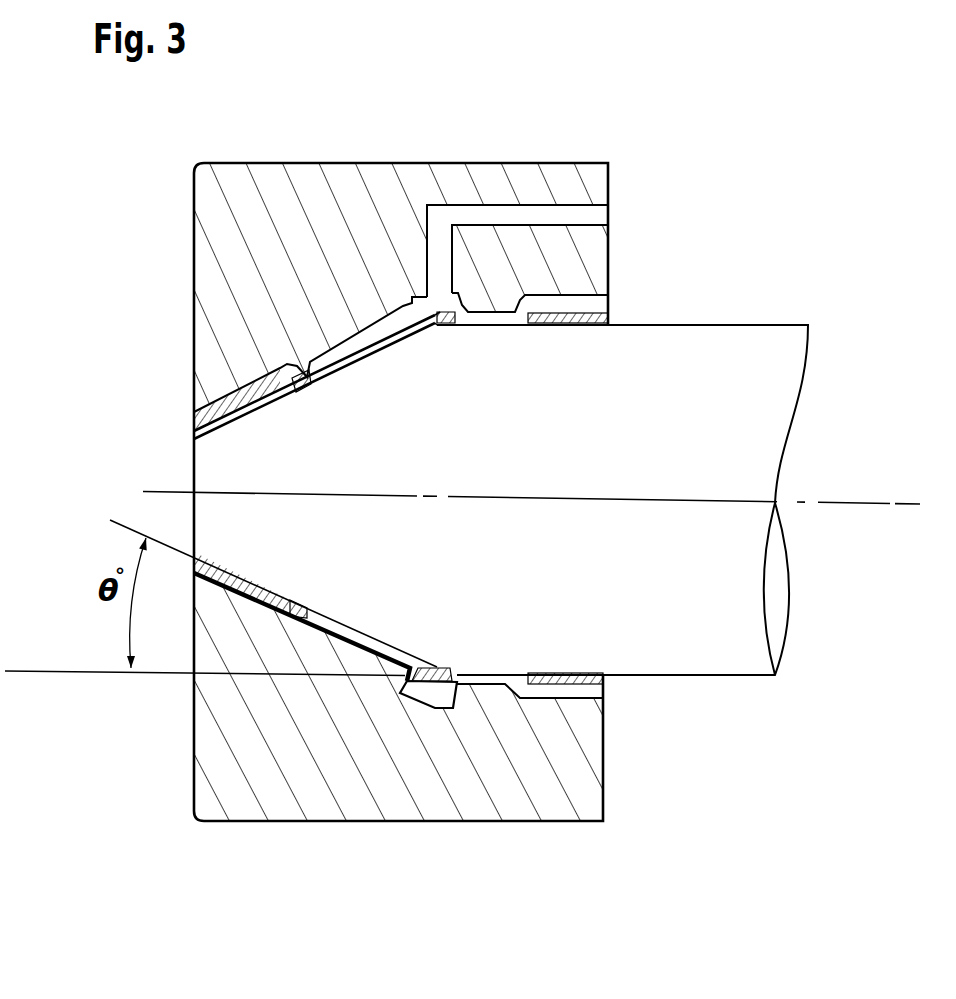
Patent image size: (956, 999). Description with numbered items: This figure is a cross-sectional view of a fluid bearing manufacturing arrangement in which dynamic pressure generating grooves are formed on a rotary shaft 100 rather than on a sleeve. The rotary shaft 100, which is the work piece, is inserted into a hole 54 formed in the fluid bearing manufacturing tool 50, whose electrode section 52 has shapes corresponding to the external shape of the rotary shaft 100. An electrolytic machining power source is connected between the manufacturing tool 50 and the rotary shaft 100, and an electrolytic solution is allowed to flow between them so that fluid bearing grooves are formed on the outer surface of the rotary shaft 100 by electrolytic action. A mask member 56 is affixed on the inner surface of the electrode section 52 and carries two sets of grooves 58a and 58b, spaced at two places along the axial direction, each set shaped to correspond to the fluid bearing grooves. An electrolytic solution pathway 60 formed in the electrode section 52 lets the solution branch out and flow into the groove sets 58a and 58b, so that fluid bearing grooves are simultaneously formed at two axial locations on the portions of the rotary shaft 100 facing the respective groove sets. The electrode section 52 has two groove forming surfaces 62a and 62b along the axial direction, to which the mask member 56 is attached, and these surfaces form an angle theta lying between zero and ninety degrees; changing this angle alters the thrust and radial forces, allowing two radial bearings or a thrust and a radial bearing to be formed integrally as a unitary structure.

The fluid bearing manufacturing tool 50 is at (347, 162).
The electrode section 52 is at (497, 308).
The hole 54 is at (603, 307).
The mask member 56 is at (195, 435).
The groove set 58a is at (405, 343).
The groove set 58b is at (507, 325).
The electrolytic solution pathway 60 is at (610, 212).
The groove forming surface 62a is at (345, 638).
The groove forming surface 62b is at (490, 685).
The rotary shaft 100 is at (707, 353).